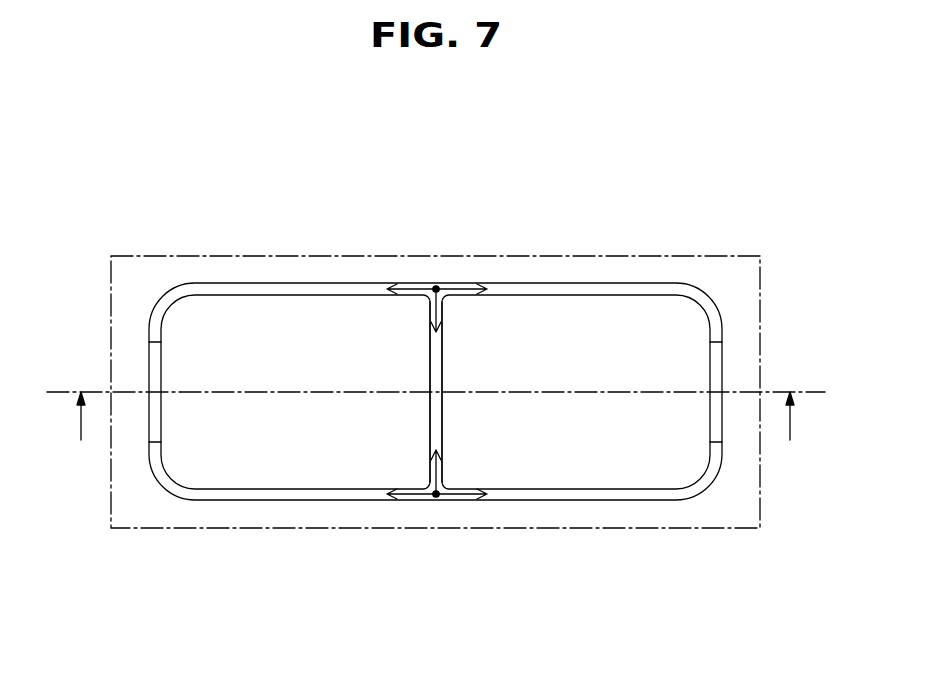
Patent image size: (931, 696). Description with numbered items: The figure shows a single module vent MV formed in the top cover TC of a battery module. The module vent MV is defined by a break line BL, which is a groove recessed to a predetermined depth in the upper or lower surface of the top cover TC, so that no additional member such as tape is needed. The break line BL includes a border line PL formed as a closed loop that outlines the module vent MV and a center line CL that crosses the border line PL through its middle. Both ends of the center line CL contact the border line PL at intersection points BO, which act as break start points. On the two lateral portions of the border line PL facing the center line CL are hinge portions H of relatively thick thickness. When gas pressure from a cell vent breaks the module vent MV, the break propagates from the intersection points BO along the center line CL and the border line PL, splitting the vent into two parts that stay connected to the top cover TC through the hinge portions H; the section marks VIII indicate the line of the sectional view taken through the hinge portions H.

The module vent MV is at (158, 228).
The top cover TC is at (720, 270).
The break line BL is at (372, 183).
The border line PL is at (540, 288).
The center line CL is at (430, 352).
The hinge portions H is at (153, 387).
The intersection points BO is at (436, 283).
The section line VIII is at (436, 432).